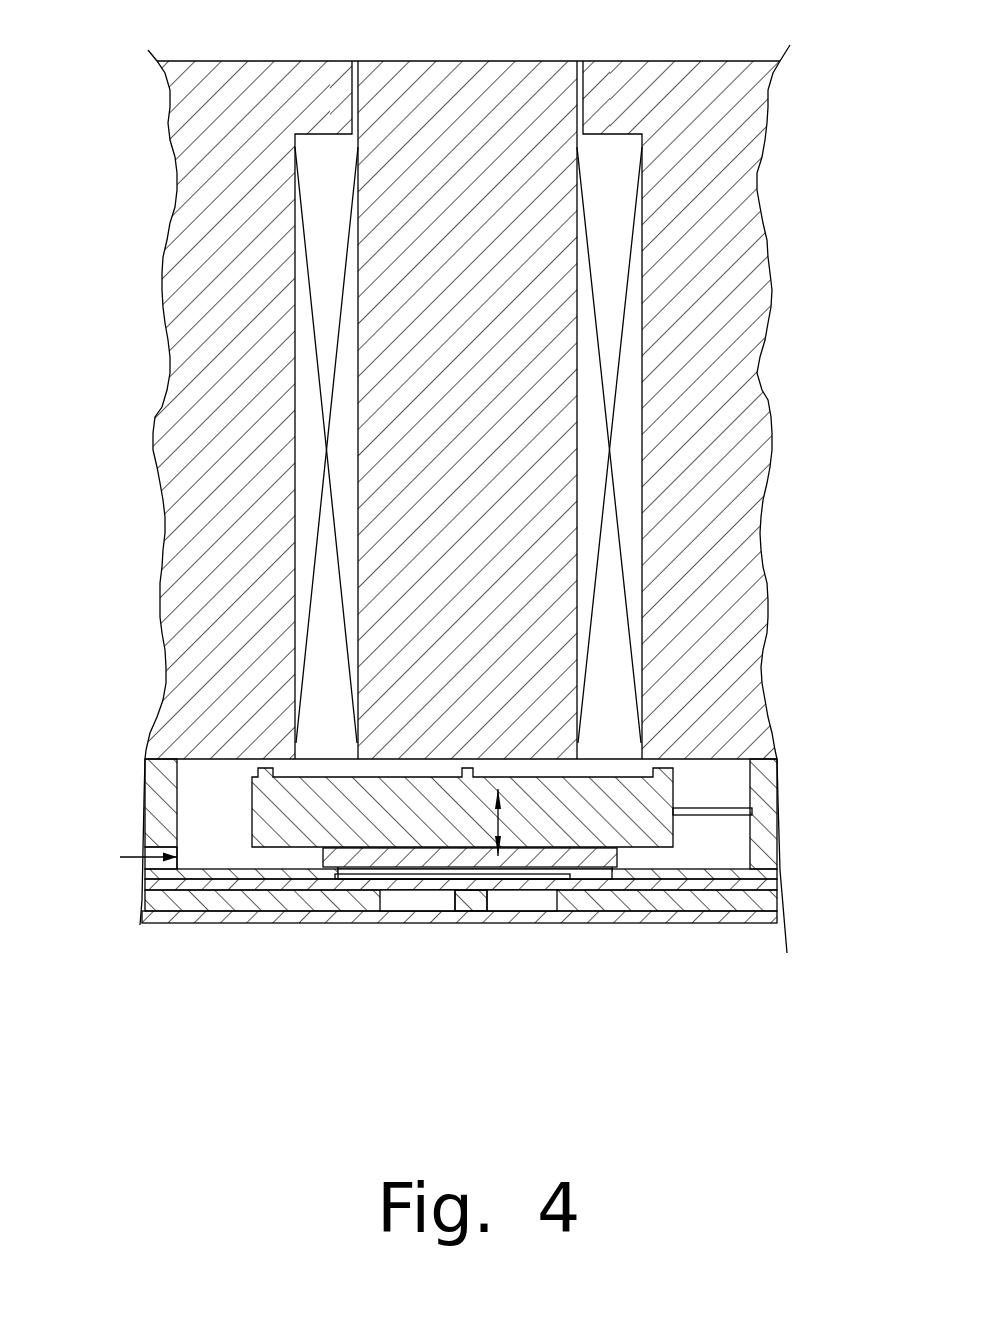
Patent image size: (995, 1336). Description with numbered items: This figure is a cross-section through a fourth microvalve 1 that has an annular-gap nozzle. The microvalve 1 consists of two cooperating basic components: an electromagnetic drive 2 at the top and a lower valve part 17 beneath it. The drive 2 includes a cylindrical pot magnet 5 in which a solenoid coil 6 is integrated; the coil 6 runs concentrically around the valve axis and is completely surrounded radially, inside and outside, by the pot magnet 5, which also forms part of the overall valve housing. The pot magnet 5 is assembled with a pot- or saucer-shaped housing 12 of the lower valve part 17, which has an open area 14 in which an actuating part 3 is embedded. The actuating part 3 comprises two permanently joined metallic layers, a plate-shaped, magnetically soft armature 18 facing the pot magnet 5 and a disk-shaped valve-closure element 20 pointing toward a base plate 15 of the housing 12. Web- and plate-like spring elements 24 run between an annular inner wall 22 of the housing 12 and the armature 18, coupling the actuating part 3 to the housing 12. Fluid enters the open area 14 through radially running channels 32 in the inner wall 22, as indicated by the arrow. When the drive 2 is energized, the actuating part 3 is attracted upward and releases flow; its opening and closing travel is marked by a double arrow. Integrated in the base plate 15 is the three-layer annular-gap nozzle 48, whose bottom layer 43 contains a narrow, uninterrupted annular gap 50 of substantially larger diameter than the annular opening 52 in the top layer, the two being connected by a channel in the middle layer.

The microvalve 1 is at (148, 668).
The electromagnetic drive 2 is at (787, 373).
The actuating part 3 is at (250, 813).
The pot magnet 5 is at (747, 555).
The solenoid coil 6 is at (617, 140).
The housing 12 is at (705, 893).
The open area 14 is at (226, 850).
The base plate 15 is at (640, 893).
The lower valve part 17 is at (790, 903).
The armature 18 is at (657, 797).
The valve-closure element 20 is at (360, 857).
The inner wall 22 is at (767, 857).
The spring elements 24 is at (727, 815).
The channels 32 is at (153, 867).
The bottom layer 43 is at (447, 905).
The annular-gap nozzle 48 is at (475, 928).
The annular gap 50 is at (390, 905).
The annular opening 52 is at (498, 892).